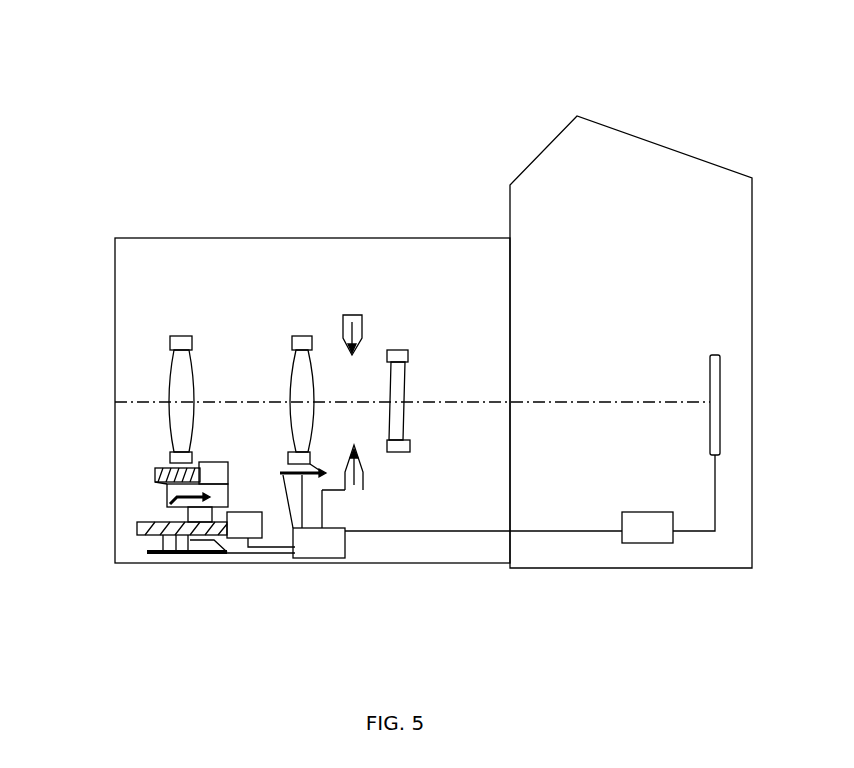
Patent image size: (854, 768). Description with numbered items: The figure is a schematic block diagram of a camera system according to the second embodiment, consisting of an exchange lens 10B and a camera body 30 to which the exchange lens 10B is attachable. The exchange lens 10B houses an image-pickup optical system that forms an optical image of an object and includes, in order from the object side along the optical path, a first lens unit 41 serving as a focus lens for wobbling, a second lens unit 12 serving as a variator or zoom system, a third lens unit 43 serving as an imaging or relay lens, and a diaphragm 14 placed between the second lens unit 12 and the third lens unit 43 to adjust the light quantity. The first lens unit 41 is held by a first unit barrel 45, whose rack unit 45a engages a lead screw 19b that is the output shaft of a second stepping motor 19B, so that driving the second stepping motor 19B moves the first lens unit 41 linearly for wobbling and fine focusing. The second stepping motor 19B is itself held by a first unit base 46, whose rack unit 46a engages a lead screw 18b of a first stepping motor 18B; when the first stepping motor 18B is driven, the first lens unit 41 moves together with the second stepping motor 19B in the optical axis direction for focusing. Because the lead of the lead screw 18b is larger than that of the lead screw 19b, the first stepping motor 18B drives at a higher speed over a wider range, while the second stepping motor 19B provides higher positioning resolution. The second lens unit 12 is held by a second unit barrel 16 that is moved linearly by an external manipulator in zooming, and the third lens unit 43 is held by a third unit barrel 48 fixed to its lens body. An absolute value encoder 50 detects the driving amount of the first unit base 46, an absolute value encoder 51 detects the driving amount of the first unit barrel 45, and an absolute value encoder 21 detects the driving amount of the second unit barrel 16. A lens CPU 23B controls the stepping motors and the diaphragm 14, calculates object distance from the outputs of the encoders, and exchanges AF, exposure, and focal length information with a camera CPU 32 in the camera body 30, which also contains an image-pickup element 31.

The exchange lens 10B is at (465, 268).
The second lens unit 12 is at (294, 336).
The diaphragm 14 is at (344, 315).
The second unit barrel 16 is at (304, 336).
The first stepping motor 18B is at (243, 512).
The lead screw 18b is at (168, 494).
The second stepping motor 19B is at (210, 462).
The lead screw 19b is at (157, 480).
The absolute value encoder 21 is at (284, 477).
The lens CPU 23B is at (316, 537).
The camera body 30 is at (590, 172).
The image-pickup element 31 is at (714, 457).
The camera CPU 32 is at (648, 543).
The first lens unit 41 is at (172, 348).
The third lens unit 43 is at (392, 350).
The first unit barrel 45 is at (190, 337).
The rack unit 45a is at (166, 535).
The first unit base 46 is at (217, 462).
The rack unit 46a is at (194, 546).
The third unit barrel 48 is at (406, 350).
The absolute value encoder 50 is at (232, 553).
The absolute value encoder 51 is at (180, 535).